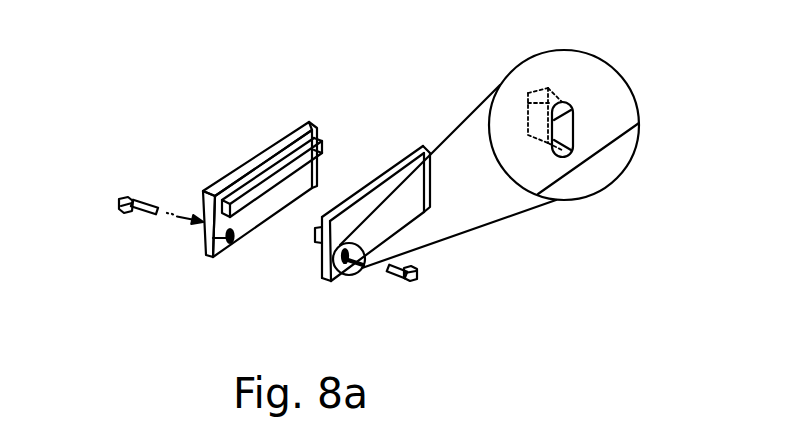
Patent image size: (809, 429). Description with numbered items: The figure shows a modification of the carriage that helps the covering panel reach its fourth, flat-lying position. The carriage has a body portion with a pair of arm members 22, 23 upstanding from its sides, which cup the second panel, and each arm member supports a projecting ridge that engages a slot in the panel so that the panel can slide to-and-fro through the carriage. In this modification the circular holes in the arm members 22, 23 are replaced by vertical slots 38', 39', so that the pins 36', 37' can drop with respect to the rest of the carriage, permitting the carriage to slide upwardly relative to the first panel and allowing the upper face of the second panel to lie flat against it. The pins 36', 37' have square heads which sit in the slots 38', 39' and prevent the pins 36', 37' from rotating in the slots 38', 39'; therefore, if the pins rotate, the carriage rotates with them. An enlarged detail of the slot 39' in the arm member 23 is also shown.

The arm member 22 is at (293, 132).
The arm member 23 is at (394, 166).
The pin 36' is at (111, 208).
The pin 37' is at (373, 300).
The vertical slot 38' is at (183, 247).
The vertical slot 39' is at (471, 160).